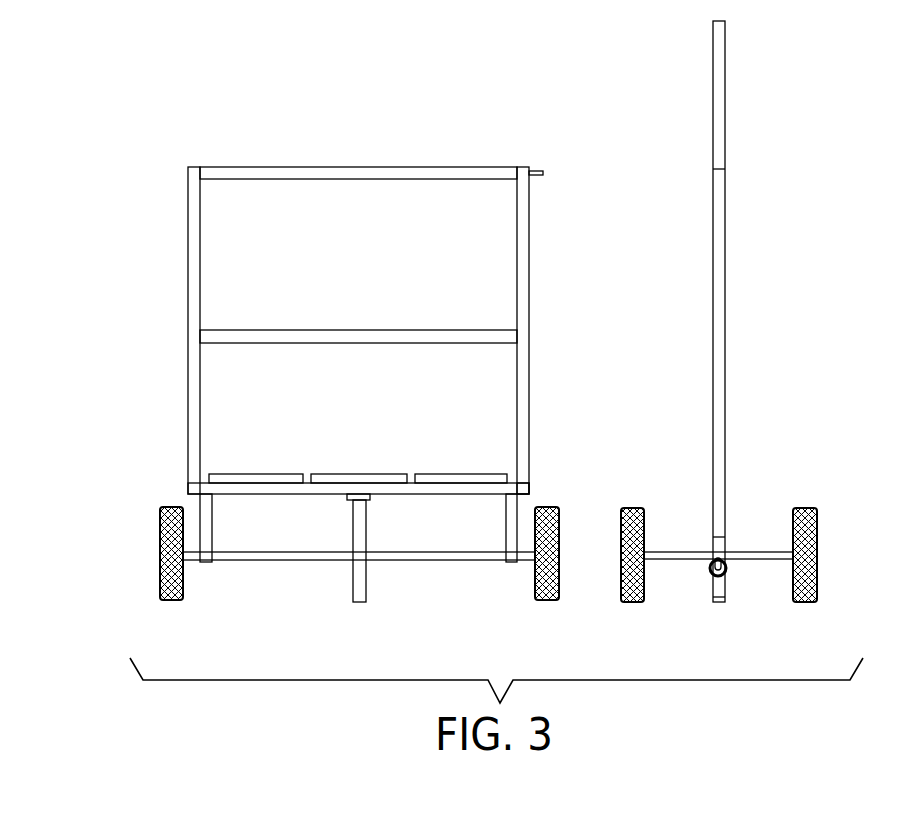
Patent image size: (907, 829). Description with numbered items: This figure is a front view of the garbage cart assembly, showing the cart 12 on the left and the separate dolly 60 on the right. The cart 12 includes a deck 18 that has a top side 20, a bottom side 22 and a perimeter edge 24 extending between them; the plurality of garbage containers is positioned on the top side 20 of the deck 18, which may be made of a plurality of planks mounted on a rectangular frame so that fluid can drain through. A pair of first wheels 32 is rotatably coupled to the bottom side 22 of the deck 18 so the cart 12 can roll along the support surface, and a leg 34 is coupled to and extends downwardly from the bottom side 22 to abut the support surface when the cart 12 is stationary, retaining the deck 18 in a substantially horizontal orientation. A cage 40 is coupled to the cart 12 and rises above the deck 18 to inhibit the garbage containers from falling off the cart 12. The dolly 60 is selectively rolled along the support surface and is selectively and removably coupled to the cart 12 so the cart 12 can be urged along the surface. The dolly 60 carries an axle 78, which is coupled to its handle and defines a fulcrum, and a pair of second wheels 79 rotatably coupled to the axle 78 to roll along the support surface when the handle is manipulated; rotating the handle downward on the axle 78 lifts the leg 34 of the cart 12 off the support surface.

The cart 12 is at (118, 479).
The deck 18 is at (530, 490).
The top side 20 is at (247, 473).
The bottom side 22 is at (265, 500).
The perimeter edge 24 is at (188, 487).
The first wheels 32 is at (160, 584).
The leg 34 is at (360, 582).
The cage 40 is at (152, 264).
The dolly 60 is at (822, 309).
The axle 78 is at (678, 552).
The second wheels 79 is at (621, 518).